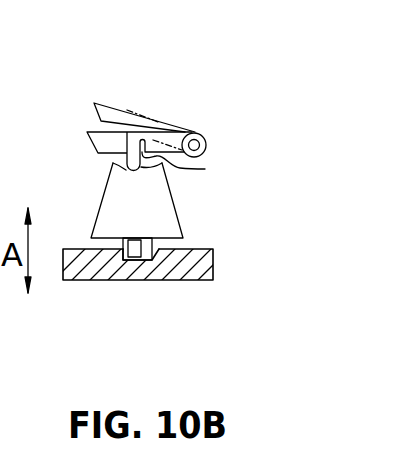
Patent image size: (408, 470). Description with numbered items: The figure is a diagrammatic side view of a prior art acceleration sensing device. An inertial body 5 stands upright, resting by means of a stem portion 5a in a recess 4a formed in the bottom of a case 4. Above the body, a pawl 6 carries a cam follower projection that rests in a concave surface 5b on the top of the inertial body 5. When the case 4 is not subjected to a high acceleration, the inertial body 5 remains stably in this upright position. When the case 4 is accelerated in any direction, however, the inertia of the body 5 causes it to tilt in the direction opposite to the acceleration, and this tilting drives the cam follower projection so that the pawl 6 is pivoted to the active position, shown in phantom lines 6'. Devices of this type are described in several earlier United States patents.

The case 4 is at (87, 275).
The recess in base plate 4a is at (122, 250).
The inertial body 5 is at (170, 215).
The stem portion 5a is at (152, 261).
The concave surface 5b is at (205, 169).
The pawl 6 is at (110, 126).
The active position of pawl 6' is at (184, 100).